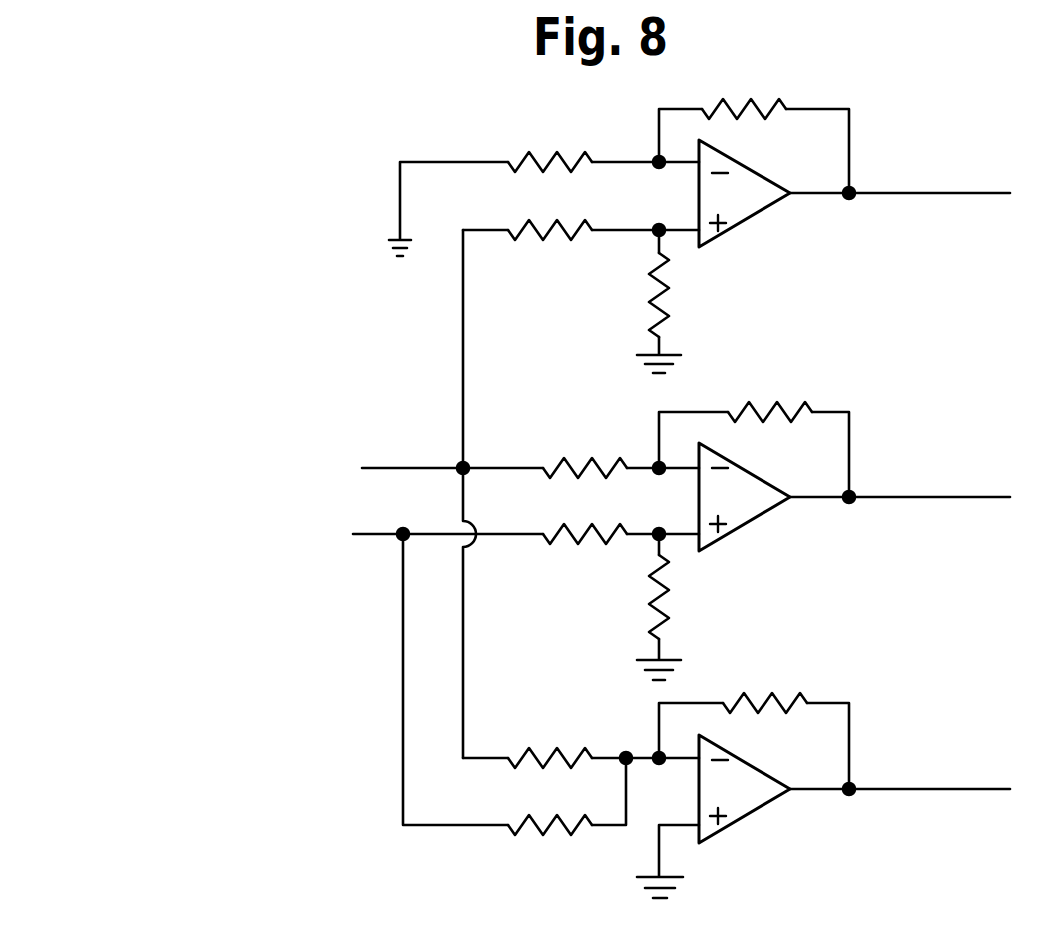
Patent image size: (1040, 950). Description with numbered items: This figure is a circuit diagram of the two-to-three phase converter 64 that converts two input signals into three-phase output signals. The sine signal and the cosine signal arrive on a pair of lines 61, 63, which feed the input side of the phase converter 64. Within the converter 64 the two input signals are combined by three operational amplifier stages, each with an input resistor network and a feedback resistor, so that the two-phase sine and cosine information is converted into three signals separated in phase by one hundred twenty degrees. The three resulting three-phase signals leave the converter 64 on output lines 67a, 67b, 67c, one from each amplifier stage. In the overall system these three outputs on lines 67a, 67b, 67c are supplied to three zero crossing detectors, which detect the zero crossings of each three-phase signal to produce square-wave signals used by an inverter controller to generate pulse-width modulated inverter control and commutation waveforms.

The 2-to-3 phase converter 64 is at (311, 154).
The line 63 is at (383, 467).
The line 61 is at (372, 535).
The first output 67a is at (917, 194).
The second output 67b is at (910, 498).
The third output 67c is at (905, 790).